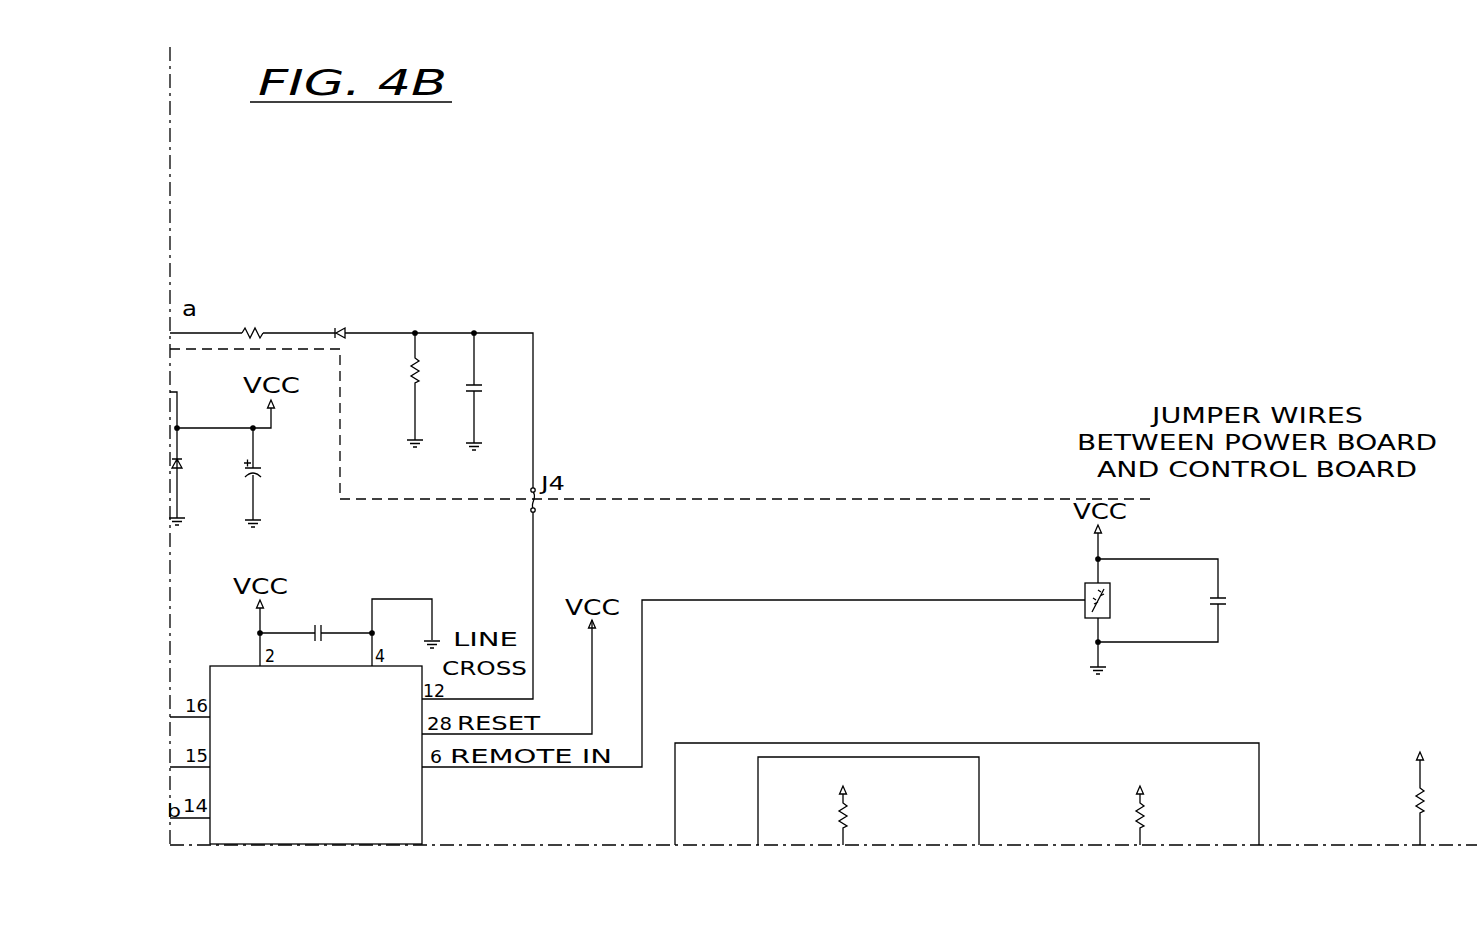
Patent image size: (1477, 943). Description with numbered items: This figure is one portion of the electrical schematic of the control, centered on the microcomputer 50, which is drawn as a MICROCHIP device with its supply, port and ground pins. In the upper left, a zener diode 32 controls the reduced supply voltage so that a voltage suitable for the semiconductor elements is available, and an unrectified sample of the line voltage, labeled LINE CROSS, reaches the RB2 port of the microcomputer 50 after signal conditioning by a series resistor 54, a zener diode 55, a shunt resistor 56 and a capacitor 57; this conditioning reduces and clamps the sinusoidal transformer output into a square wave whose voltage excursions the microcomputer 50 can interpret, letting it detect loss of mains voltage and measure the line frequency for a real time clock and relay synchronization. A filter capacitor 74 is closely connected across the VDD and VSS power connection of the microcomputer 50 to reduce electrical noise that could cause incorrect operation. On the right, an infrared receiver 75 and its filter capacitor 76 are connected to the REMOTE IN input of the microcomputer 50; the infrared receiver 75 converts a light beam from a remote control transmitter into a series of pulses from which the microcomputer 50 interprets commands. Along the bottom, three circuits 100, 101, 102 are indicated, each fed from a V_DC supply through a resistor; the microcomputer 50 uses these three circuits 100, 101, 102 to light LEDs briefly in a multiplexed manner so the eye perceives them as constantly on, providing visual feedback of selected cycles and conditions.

The zener diode 32 is at (208, 445).
The resistor 54 is at (256, 331).
The zener diode 55 is at (347, 332).
The resistor 56 is at (412, 367).
The capacitor 57 is at (497, 383).
The filter capacitor 74 is at (319, 642).
The microcomputer 50 is at (333, 772).
The infrared receiver 75 is at (1085, 594).
The filter capacitor 76 is at (1220, 596).
The LED circuit 100 is at (826, 723).
The LED circuit 101 is at (1137, 723).
The LED circuit 102 is at (1418, 663).